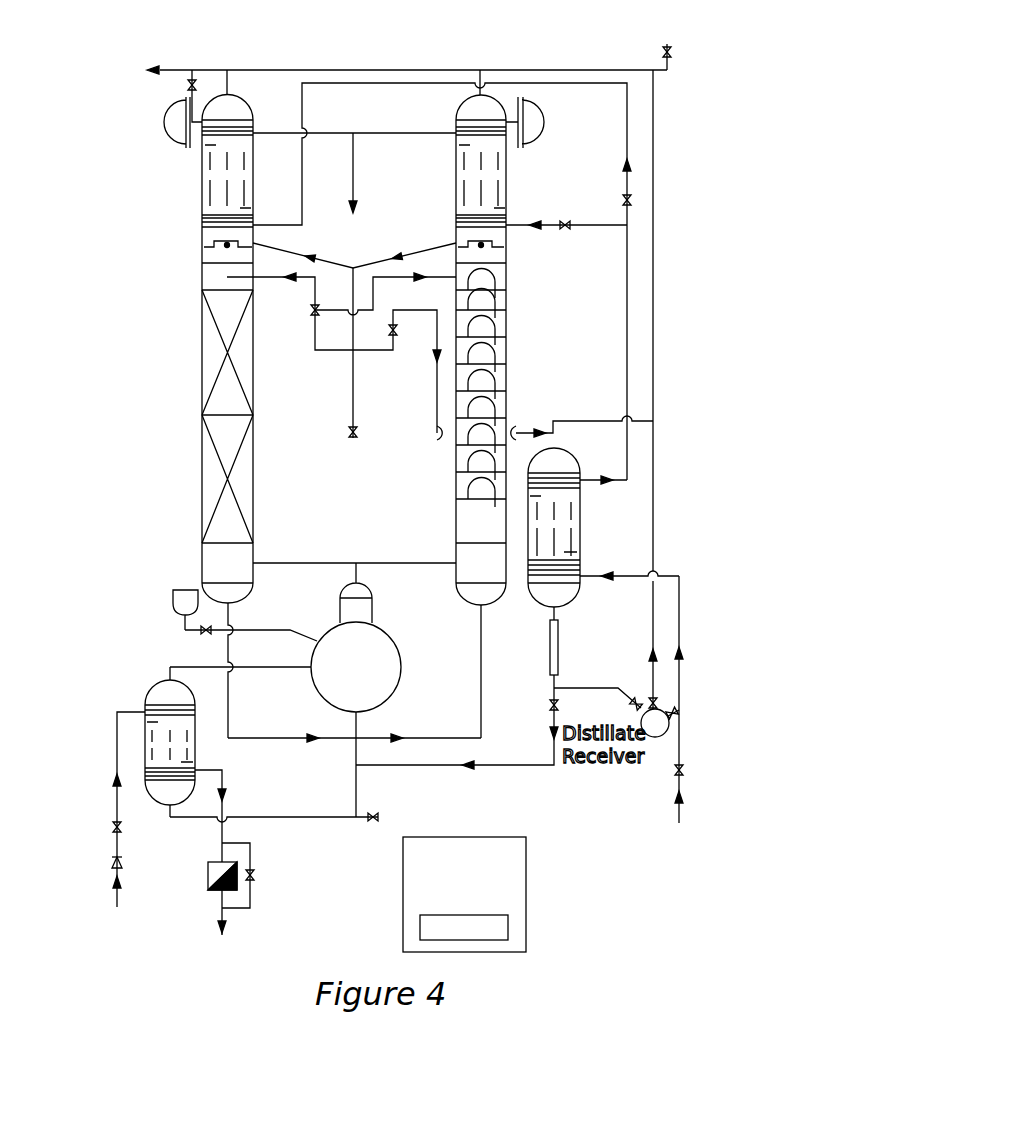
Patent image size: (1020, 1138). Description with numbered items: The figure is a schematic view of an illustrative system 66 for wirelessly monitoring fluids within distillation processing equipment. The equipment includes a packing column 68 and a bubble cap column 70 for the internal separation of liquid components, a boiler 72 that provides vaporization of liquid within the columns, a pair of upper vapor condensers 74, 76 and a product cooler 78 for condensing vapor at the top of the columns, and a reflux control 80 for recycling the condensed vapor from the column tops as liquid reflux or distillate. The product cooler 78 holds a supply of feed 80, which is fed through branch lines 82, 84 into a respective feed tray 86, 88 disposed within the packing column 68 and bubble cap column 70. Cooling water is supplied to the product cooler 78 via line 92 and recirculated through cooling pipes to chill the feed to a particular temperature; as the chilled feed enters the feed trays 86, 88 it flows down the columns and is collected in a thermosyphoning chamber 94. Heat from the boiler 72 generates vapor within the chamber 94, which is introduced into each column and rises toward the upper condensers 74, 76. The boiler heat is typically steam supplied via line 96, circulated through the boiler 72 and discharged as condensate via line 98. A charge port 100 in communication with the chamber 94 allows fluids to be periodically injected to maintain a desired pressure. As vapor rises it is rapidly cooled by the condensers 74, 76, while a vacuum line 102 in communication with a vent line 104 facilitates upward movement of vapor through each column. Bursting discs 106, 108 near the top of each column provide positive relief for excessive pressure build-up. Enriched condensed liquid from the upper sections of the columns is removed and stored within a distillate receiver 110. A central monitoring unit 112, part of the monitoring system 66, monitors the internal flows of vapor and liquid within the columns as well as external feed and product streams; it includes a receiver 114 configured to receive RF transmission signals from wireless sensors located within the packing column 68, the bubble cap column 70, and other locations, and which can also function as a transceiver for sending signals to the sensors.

The system of wirelessly monitoring fluids 66 is at (393, 42).
The packing column 68 is at (190, 305).
The bubble cap column 70 is at (520, 306).
The boiler 72 is at (158, 686).
The upper vapor condenser 74 is at (202, 176).
The upper vapor condenser 76 is at (506, 177).
The product cooler 78 is at (580, 498).
The reflux control 80 is at (380, 208).
The branch line 82 is at (303, 166).
The branch line 84 is at (599, 228).
The feed tray 86 is at (212, 243).
The feed tray 88 is at (465, 242).
The cooling water line 92 is at (638, 580).
The thermosyphoning chamber 94 is at (384, 643).
The steam line 96 is at (117, 742).
The condensate line 98 is at (222, 858).
The charge port 100 is at (186, 596).
The vacuum line 102 is at (180, 68).
The vent line 104 is at (665, 63).
The bursting disc 106 is at (165, 120).
The bursting disc 108 is at (543, 107).
The distillate receiver 110 is at (657, 737).
The central monitoring unit 112 is at (513, 845).
The receiver 114 is at (508, 930).